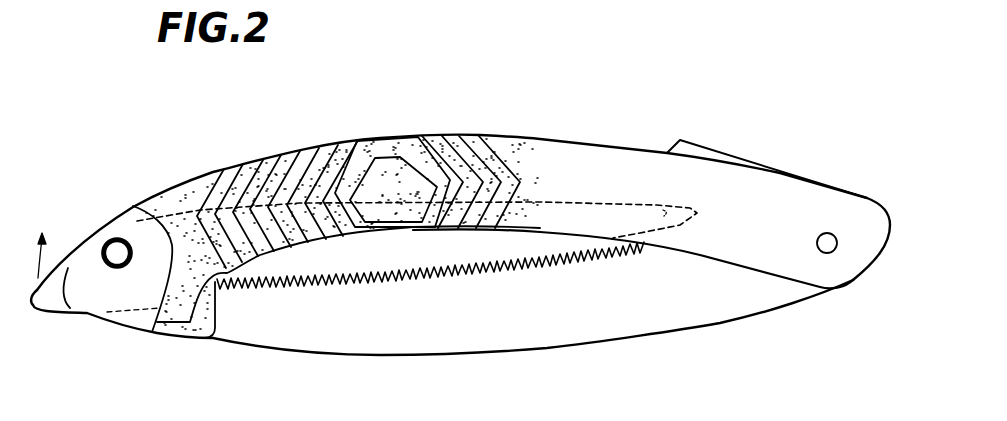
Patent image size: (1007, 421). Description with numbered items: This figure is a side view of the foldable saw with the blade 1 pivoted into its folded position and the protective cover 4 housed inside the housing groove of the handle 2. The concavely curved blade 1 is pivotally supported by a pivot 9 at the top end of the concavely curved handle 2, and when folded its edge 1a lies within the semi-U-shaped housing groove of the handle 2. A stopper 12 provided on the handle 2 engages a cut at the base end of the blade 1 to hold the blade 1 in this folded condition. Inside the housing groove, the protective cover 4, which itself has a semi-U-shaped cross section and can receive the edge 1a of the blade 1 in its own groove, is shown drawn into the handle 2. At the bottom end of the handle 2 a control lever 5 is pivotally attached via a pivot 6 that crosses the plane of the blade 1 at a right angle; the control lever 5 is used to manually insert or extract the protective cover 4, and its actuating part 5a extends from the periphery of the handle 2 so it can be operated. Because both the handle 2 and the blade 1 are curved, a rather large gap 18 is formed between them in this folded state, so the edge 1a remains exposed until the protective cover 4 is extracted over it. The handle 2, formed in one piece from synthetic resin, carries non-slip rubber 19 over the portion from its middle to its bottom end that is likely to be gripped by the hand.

The blade 1 is at (630, 305).
The edge 1a is at (458, 268).
The handle 2 is at (597, 178).
The protective cover 4 is at (289, 148).
The control lever 5 is at (132, 292).
The actuating part 5a is at (50, 300).
The pivot 6 is at (117, 248).
The pivot 9 is at (827, 245).
The stopper 12 is at (733, 151).
The gap 18 is at (440, 250).
The non-slip rubber 19 is at (210, 200).